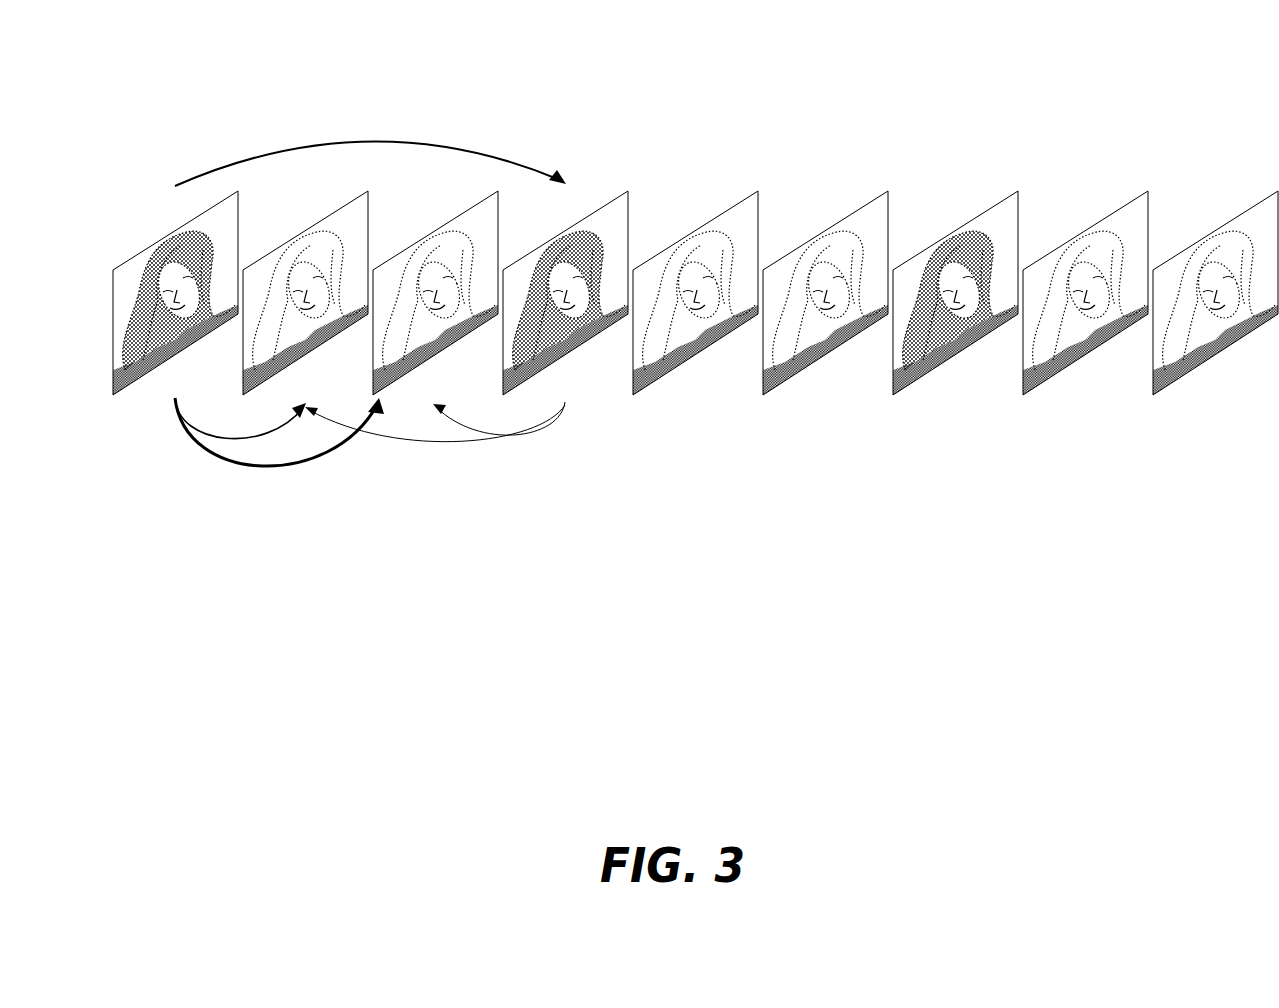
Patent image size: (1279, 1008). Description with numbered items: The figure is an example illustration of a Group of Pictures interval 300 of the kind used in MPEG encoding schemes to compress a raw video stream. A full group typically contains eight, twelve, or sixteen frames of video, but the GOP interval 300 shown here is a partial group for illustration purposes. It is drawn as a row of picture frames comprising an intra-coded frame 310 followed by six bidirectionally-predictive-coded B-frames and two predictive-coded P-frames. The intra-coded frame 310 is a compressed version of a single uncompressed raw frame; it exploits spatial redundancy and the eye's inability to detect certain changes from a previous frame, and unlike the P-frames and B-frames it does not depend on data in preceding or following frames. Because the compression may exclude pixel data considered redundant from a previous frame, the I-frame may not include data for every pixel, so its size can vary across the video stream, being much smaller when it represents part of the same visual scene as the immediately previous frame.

The Group of Pictures interval 300 is at (731, 55).
The intra-coded frame 310 is at (115, 257).